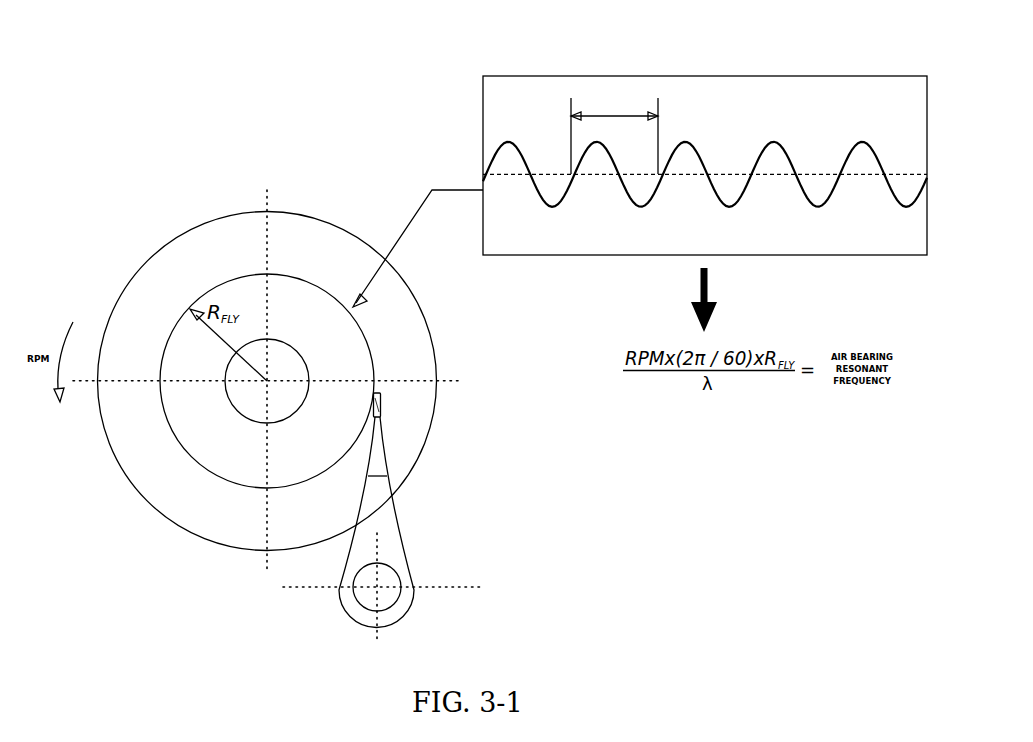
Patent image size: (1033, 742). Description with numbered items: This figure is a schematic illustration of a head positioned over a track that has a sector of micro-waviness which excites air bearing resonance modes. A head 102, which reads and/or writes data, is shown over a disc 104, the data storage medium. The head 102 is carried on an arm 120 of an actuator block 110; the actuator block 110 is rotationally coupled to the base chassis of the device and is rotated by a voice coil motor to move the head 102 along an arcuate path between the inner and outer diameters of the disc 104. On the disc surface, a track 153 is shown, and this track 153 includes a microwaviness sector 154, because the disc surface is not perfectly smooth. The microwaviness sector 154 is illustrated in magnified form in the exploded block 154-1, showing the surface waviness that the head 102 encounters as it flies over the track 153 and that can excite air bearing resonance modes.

The head 102 is at (381, 402).
The disc 104 is at (330, 236).
The actuator block 110 is at (408, 562).
The arm 120 is at (385, 498).
The track 153 is at (373, 360).
The microwaviness sector 154 is at (360, 312).
The exploded block 154-1 is at (753, 85).